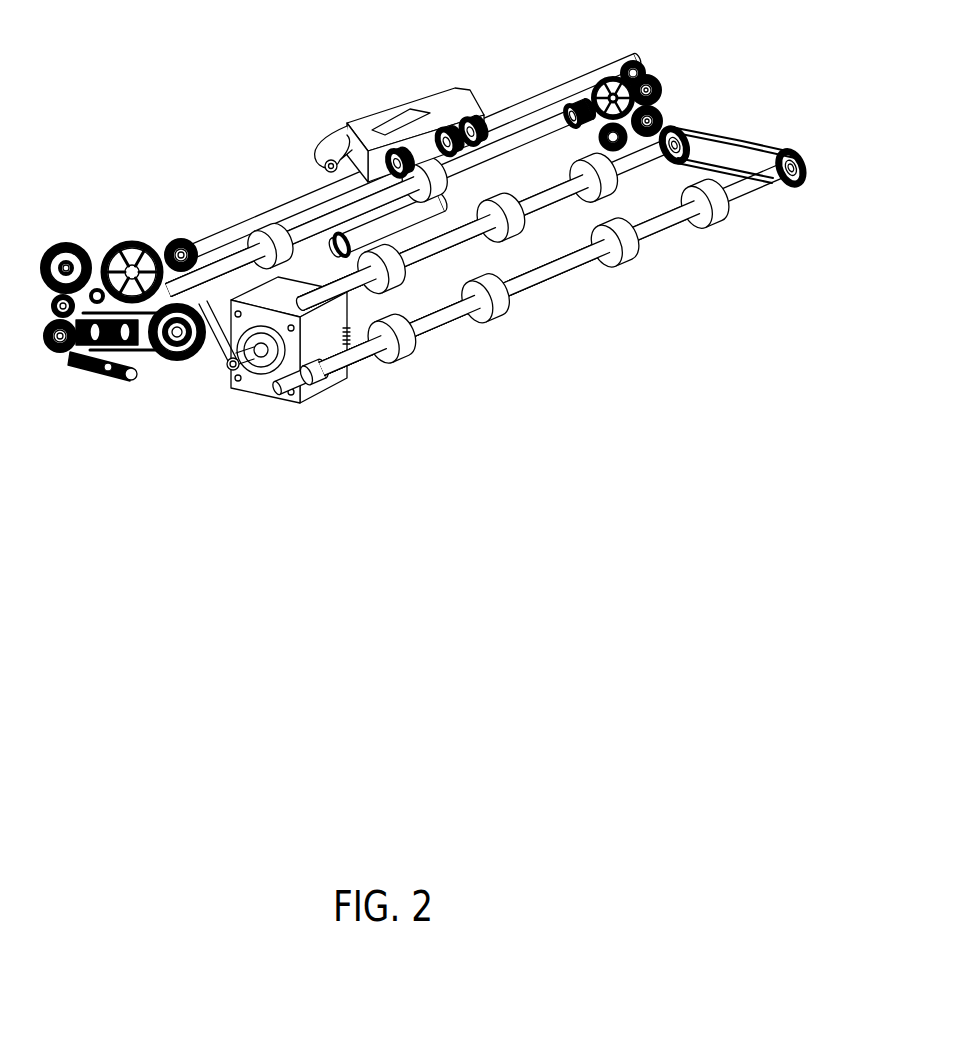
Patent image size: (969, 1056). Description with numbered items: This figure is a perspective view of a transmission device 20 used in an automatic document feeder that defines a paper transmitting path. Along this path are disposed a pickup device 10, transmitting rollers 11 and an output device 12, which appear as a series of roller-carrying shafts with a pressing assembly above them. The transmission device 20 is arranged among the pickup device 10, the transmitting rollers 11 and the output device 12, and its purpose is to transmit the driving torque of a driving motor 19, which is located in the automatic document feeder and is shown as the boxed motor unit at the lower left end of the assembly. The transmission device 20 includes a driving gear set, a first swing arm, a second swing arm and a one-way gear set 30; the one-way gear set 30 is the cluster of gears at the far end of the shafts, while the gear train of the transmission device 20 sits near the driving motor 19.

The pickup device 10 is at (388, 128).
The transmitting rollers 11 is at (695, 160).
The output device 12 is at (293, 262).
The driving motor 19 is at (258, 392).
The transmission device 20 is at (98, 238).
The one-way gear set 30 is at (650, 64).